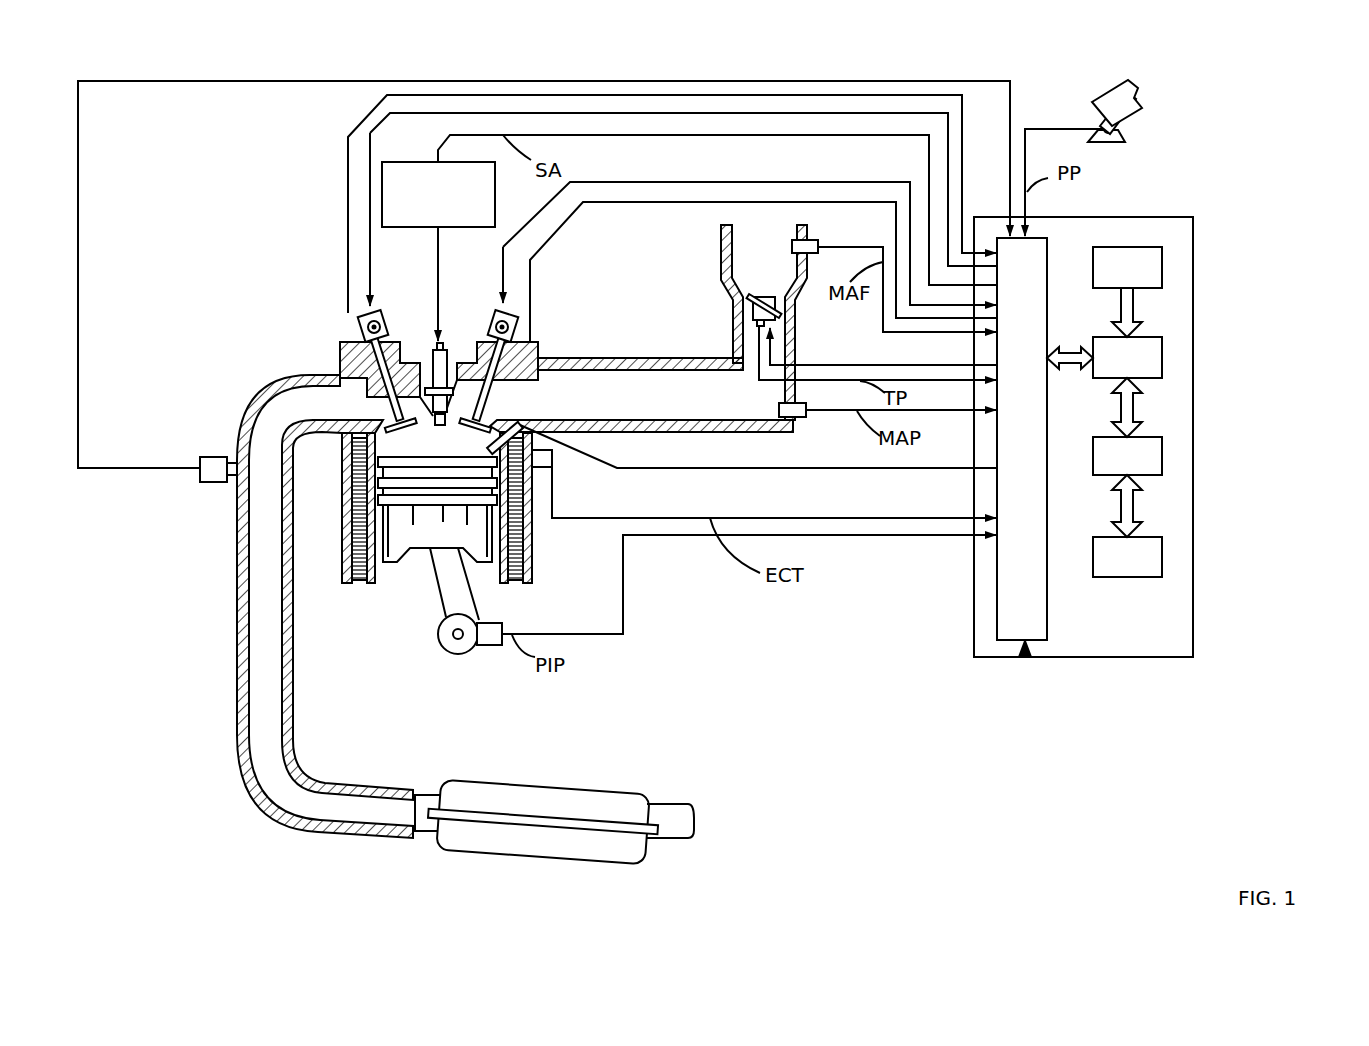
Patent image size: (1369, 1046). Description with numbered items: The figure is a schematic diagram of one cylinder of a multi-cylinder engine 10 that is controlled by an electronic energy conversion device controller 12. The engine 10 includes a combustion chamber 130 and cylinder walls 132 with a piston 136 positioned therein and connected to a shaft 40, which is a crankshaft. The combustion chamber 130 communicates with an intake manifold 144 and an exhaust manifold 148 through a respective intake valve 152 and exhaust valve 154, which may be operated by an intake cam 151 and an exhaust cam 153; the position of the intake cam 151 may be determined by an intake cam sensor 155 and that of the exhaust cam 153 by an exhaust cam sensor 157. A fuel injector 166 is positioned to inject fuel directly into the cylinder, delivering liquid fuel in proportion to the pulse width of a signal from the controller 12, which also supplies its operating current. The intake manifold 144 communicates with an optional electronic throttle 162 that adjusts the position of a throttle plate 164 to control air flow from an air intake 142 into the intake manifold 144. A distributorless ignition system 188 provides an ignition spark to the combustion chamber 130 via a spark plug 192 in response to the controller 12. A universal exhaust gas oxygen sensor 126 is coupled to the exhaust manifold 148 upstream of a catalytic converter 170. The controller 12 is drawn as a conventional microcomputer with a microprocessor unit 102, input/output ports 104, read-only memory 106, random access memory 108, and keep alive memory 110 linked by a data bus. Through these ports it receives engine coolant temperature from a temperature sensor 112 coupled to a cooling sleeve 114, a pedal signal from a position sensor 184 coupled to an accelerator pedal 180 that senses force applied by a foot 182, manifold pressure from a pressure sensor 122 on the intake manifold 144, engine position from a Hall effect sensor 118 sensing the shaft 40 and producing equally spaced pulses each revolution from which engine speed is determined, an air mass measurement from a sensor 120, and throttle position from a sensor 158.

The engine 10 is at (273, 296).
The energy conversion device controller 12 is at (1190, 217).
The shaft 40 is at (448, 650).
The microprocessor unit 102 is at (1162, 352).
The input/output ports 104 is at (1047, 247).
The read-only memory 106 is at (1162, 268).
The random access memory 108 is at (1162, 452).
The keep alive memory 110 is at (1162, 552).
The temperature sensor 112 is at (553, 470).
The cooling sleeve 114 is at (532, 538).
The Hall effect sensor 118 is at (488, 647).
The air mass sensor 120 is at (812, 240).
The pressure sensor 122 is at (800, 418).
The Universal Exhaust Gas Oxygen (UEGO) sensor 126 is at (197, 460).
The combustion chamber 130 is at (362, 532).
The cylinder walls 132 is at (382, 575).
The piston 136 is at (418, 535).
The air intake 142 is at (787, 271).
The intake manifold 144 is at (725, 406).
The exhaust manifold 148 is at (335, 413).
The intake cam 151 is at (493, 322).
The intake valve 152 is at (478, 407).
The exhaust cam 153 is at (367, 318).
The exhaust valve 154 is at (390, 400).
The intake cam sensor 155 is at (512, 330).
The exhaust cam sensor 157 is at (358, 332).
The throttle position sensor 158 is at (745, 323).
The electronic throttle 162 is at (783, 300).
The throttle plate 164 is at (748, 300).
The fuel injector 166 is at (540, 455).
The catalytic converter 170 is at (452, 783).
The accelerator pedal 180 is at (1097, 122).
The foot 182 is at (1140, 97).
The position sensor 184 is at (1117, 128).
The distributorless ignition system 188 is at (396, 162).
The spark plug 192 is at (440, 343).